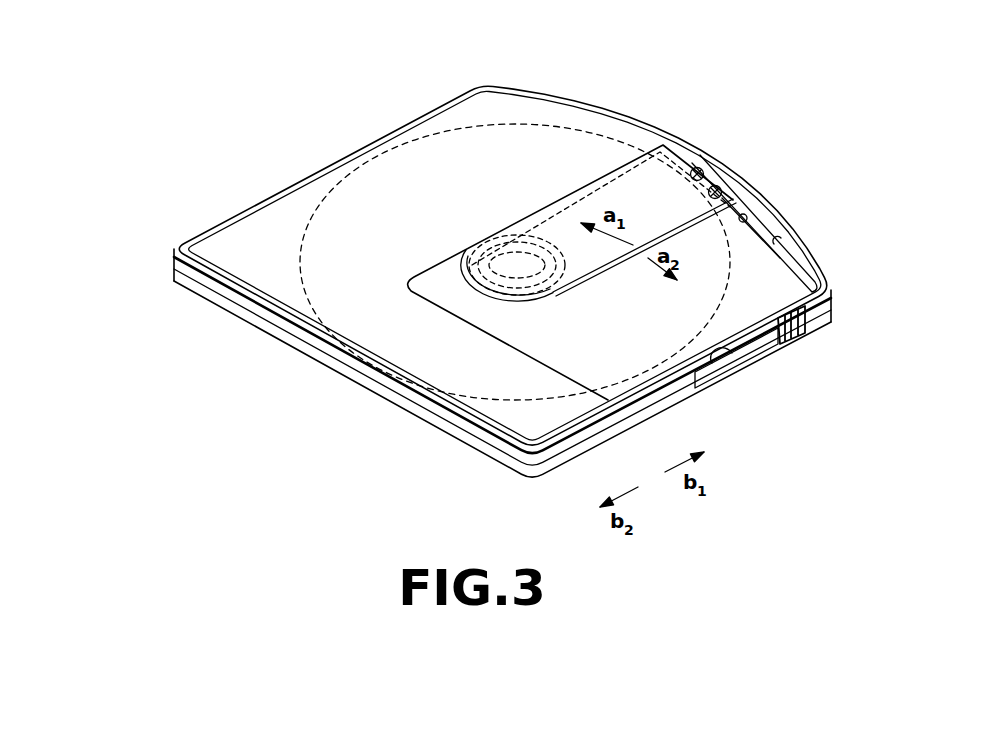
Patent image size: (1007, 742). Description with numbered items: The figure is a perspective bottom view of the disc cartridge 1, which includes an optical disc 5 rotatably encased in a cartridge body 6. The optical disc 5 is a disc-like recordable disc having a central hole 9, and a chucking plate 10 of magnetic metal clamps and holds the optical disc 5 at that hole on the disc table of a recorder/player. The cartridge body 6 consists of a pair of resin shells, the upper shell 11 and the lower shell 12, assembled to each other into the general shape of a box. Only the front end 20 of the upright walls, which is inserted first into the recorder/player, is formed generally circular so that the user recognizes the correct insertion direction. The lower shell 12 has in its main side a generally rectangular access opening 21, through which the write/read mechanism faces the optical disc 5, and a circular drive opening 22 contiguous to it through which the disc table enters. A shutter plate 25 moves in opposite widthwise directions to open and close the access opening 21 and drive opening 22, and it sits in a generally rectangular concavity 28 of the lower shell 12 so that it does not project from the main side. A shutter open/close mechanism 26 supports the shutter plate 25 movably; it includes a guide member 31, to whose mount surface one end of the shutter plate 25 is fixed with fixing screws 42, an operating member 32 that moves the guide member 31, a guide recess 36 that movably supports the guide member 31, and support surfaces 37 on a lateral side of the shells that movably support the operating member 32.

The disc cartridge 1 is at (275, 417).
The optical disc 5 is at (363, 193).
The cartridge body 6 is at (437, 281).
The central hole 9 is at (503, 243).
The chucking plate 10 is at (477, 238).
The upper shell 11 is at (177, 274).
The lower shell 12 is at (187, 262).
The front end 20 is at (825, 292).
The access opening 21 is at (728, 289).
The drive opening 22 is at (558, 294).
The shutter plate 25 is at (572, 218).
The shutter open/close mechanism 26 is at (772, 198).
The concavity 28 is at (414, 274).
The guide member 31 is at (703, 200).
The operating member 32 is at (800, 344).
The guide recess 36 is at (780, 240).
The support surfaces 37 is at (733, 364).
The fixing screws 42 is at (697, 167).